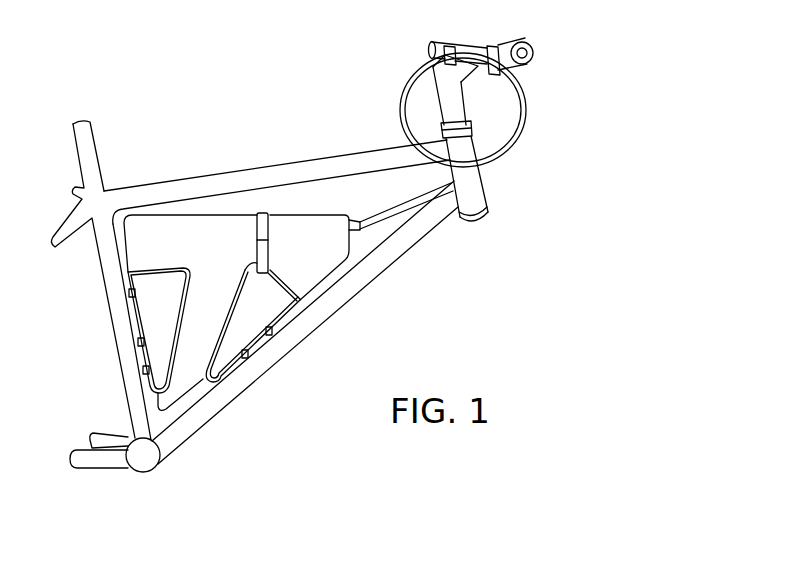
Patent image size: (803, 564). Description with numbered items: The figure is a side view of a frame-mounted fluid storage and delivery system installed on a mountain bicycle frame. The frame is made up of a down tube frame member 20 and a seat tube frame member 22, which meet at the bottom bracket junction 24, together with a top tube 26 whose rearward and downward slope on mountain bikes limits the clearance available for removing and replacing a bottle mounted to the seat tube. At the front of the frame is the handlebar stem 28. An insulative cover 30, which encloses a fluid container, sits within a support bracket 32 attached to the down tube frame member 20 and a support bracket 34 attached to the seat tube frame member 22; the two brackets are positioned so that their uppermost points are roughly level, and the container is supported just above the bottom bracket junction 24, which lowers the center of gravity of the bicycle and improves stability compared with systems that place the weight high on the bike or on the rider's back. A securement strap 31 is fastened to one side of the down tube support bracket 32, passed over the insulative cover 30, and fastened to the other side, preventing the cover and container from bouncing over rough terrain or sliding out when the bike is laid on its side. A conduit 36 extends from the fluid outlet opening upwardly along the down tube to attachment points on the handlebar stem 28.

The down tube frame member 20 is at (245, 379).
The seat tube frame member 22 is at (102, 282).
The bottom bracket junction 24 is at (165, 447).
The top tube 26 is at (182, 184).
The handlebar stem 28 is at (512, 34).
The insulative cover 30 is at (333, 262).
The securement strap 31 is at (268, 223).
The support bracket 32 is at (333, 262).
The support bracket 34 is at (176, 342).
The conduit 36 is at (527, 115).